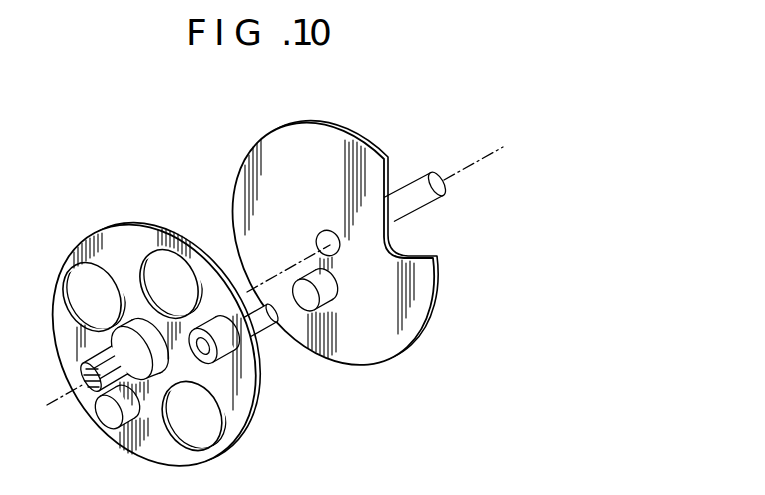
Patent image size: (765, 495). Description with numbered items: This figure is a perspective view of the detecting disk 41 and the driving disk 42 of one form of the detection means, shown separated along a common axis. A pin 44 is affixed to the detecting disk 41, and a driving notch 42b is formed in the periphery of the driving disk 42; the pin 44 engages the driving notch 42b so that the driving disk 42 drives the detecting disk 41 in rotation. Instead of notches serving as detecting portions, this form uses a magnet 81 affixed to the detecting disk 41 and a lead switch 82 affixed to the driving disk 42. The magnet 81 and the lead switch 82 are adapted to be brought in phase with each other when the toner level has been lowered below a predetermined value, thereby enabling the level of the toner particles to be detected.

The detecting disk 41 is at (136, 232).
The driving disk 42 is at (275, 135).
The driving notch 42b is at (426, 236).
The pin 44 is at (268, 325).
The magnet 81 is at (102, 415).
The lead switch 82 is at (326, 288).